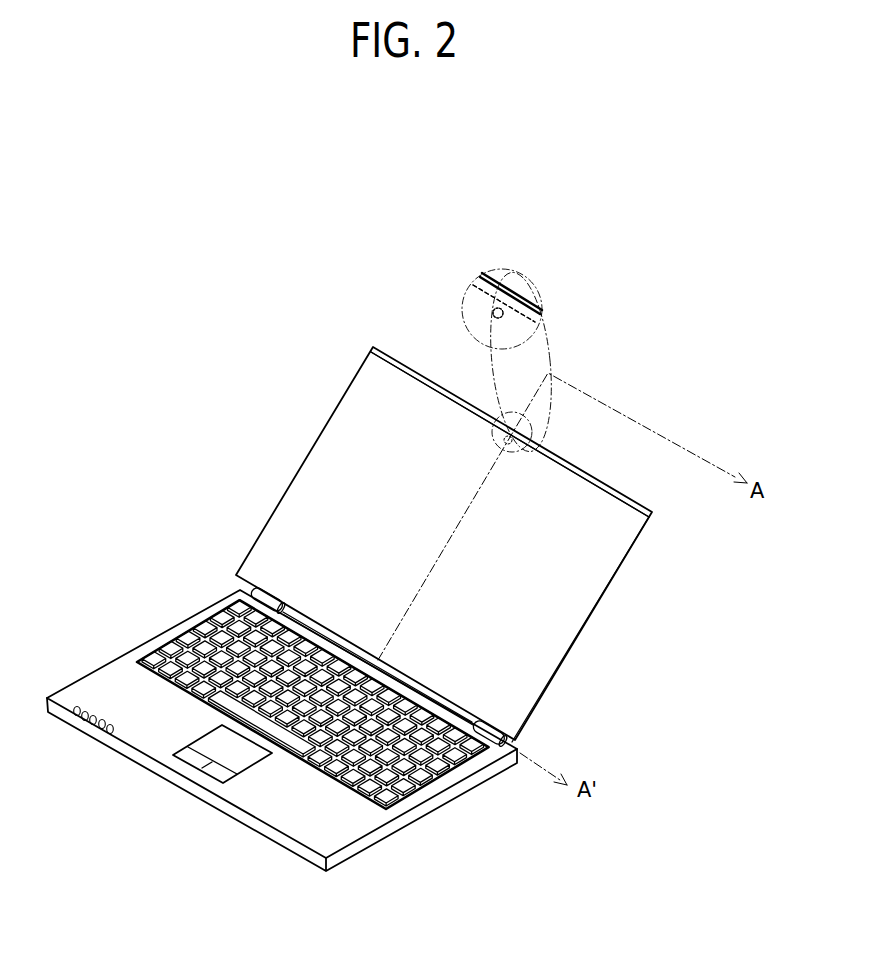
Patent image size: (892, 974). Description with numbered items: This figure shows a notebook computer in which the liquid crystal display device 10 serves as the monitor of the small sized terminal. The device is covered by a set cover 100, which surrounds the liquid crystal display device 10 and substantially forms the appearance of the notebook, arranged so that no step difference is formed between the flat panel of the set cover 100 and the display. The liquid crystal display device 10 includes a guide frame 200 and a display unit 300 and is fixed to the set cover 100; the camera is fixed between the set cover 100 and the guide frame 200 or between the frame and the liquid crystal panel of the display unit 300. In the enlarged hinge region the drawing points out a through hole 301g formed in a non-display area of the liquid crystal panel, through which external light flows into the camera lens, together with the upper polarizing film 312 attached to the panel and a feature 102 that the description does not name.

The liquid crystal display device 10 is at (362, 514).
The set cover 100 is at (594, 618).
The rear cover of housing 102 is at (503, 287).
The guide frame 200 is at (533, 312).
The display unit 300 is at (545, 655).
The through hole 301g is at (495, 311).
The upper polarizing film 312 is at (472, 313).